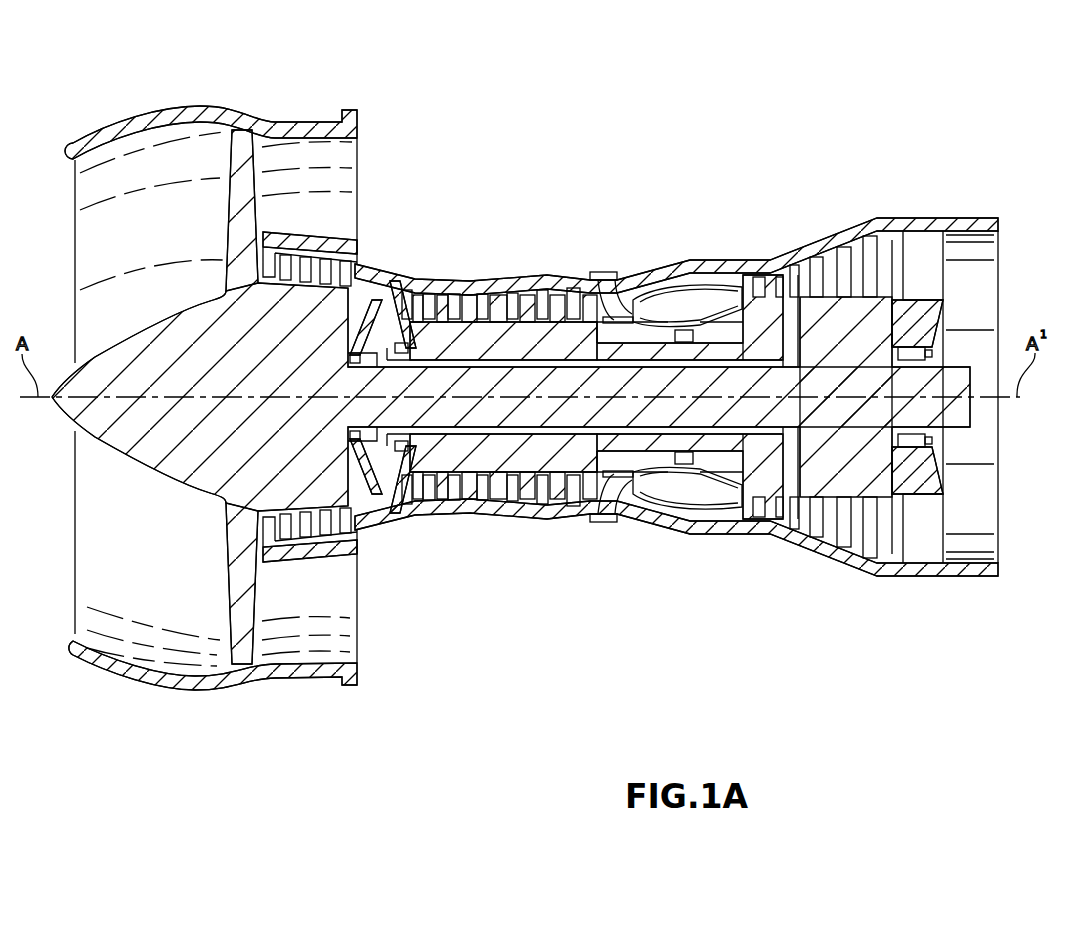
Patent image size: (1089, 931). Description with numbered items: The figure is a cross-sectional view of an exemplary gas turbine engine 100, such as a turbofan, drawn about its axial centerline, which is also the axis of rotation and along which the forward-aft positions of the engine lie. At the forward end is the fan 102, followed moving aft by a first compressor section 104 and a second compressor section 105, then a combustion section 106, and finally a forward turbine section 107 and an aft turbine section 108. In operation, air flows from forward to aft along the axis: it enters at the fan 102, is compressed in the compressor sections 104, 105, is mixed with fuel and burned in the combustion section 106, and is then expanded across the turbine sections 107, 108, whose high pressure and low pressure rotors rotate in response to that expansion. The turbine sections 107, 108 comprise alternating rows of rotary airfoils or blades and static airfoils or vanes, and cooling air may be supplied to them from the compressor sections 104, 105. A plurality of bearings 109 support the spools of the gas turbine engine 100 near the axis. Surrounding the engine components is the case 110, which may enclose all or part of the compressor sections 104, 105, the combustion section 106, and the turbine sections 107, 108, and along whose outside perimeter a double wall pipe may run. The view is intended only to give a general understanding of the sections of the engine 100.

The gas turbine engine 100 is at (762, 146).
The fan 102 is at (257, 172).
The compressor section 104 is at (262, 694).
The compressor section 105 is at (413, 527).
The combustion section 106 is at (618, 547).
The turbine section 107 is at (758, 591).
The turbine section 108 is at (800, 591).
The bearings 109 is at (930, 349).
The case 110 is at (386, 330).